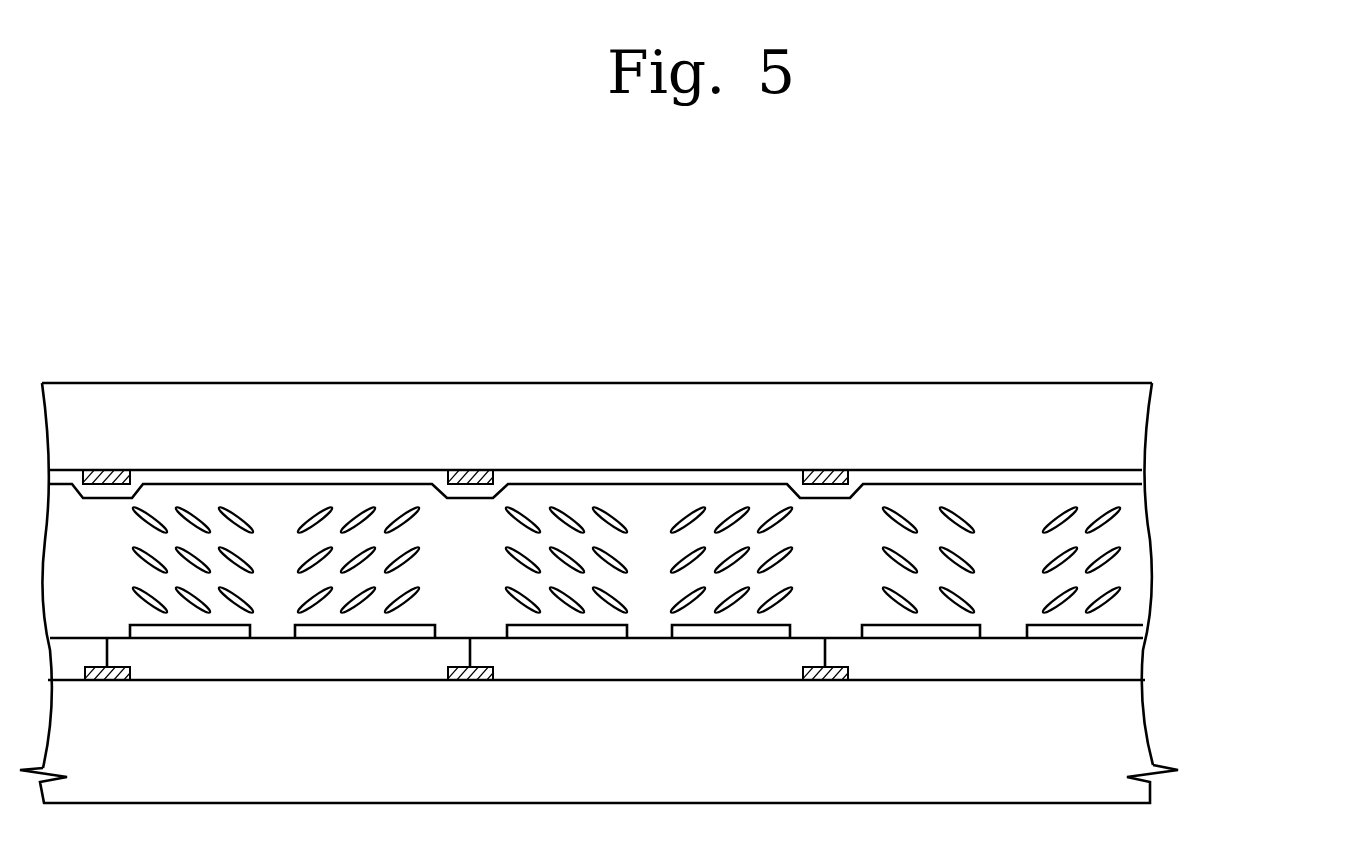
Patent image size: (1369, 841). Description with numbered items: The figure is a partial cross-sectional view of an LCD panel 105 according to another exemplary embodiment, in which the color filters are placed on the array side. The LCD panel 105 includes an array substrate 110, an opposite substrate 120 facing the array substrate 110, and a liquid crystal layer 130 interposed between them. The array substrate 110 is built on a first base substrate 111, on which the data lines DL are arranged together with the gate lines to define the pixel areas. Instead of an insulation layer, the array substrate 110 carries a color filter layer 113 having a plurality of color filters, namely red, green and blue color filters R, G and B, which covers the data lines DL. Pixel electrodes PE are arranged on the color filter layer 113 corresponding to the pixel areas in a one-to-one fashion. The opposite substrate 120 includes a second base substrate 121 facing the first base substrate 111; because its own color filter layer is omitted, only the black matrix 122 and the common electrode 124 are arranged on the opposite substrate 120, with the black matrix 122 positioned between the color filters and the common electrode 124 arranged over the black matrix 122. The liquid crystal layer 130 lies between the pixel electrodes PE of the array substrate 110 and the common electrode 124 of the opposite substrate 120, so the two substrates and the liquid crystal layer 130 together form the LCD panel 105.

The LCD panel 105 is at (1150, 273).
The array substrate 110 is at (1280, 617).
The first base substrate 111 is at (1137, 726).
The color filter layer 113 is at (1137, 661).
The pixel electrode PE is at (1137, 631).
The data line DL is at (824, 681).
The opposite substrate 120 is at (1287, 403).
The second base substrate 121 is at (1137, 419).
The black matrix 122 is at (821, 473).
The common electrode 124 is at (1137, 478).
The liquid crystal layer 130 is at (1117, 553).